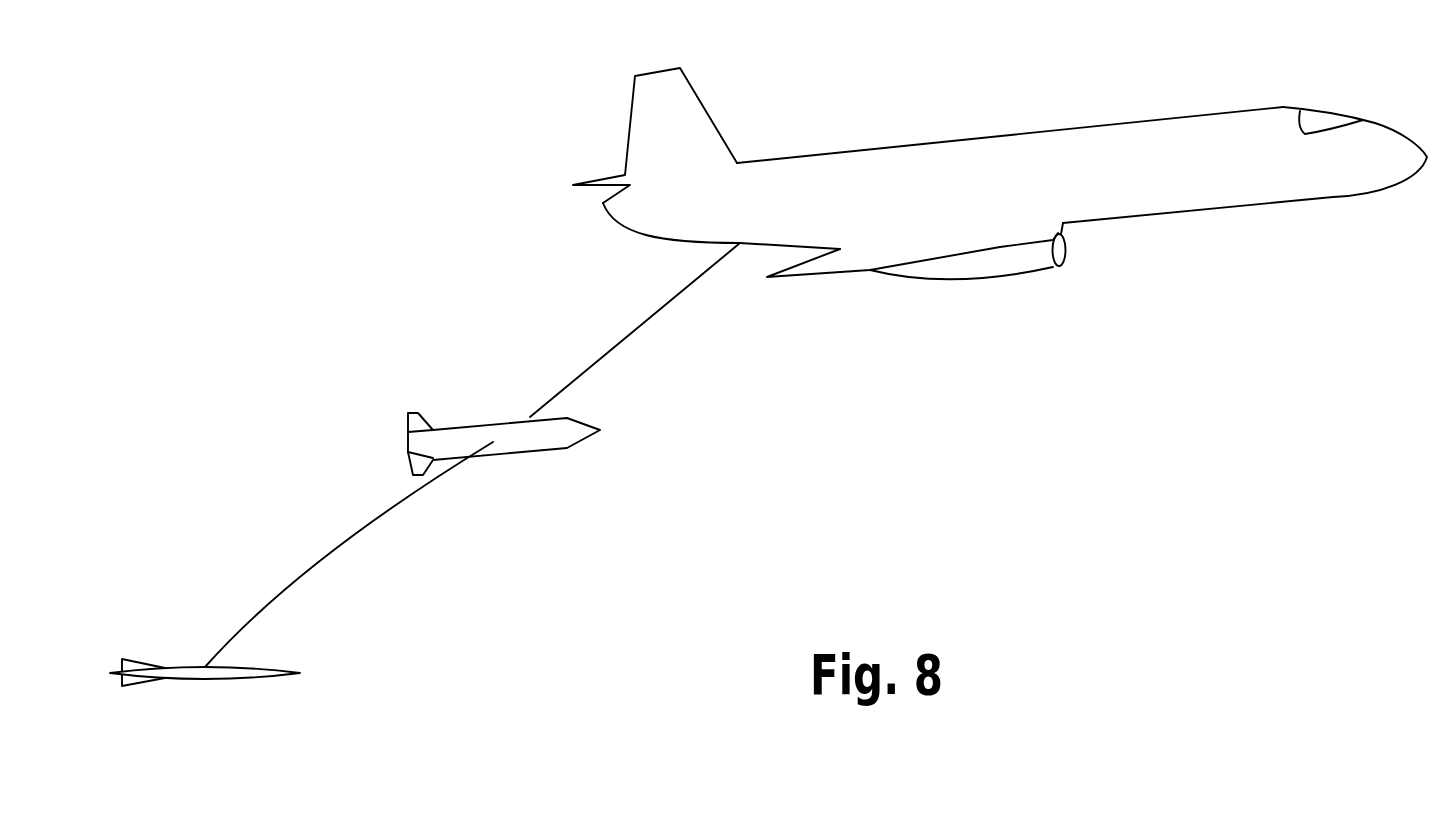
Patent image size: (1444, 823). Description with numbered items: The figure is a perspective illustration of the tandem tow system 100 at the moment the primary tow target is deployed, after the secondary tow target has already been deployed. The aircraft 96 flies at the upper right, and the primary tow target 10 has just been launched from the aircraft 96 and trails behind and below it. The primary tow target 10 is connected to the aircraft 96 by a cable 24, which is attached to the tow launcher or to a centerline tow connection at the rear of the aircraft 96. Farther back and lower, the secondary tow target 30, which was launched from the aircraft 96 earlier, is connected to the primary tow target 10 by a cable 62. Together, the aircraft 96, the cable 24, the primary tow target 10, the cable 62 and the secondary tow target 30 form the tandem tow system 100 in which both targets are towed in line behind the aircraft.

The aircraft 96 is at (913, 157).
The cable 24 is at (627, 335).
The primary tow target 10 is at (563, 443).
The cable 62 is at (322, 560).
The secondary tow target 30 is at (252, 678).
The tandem tow system 100 is at (442, 332).